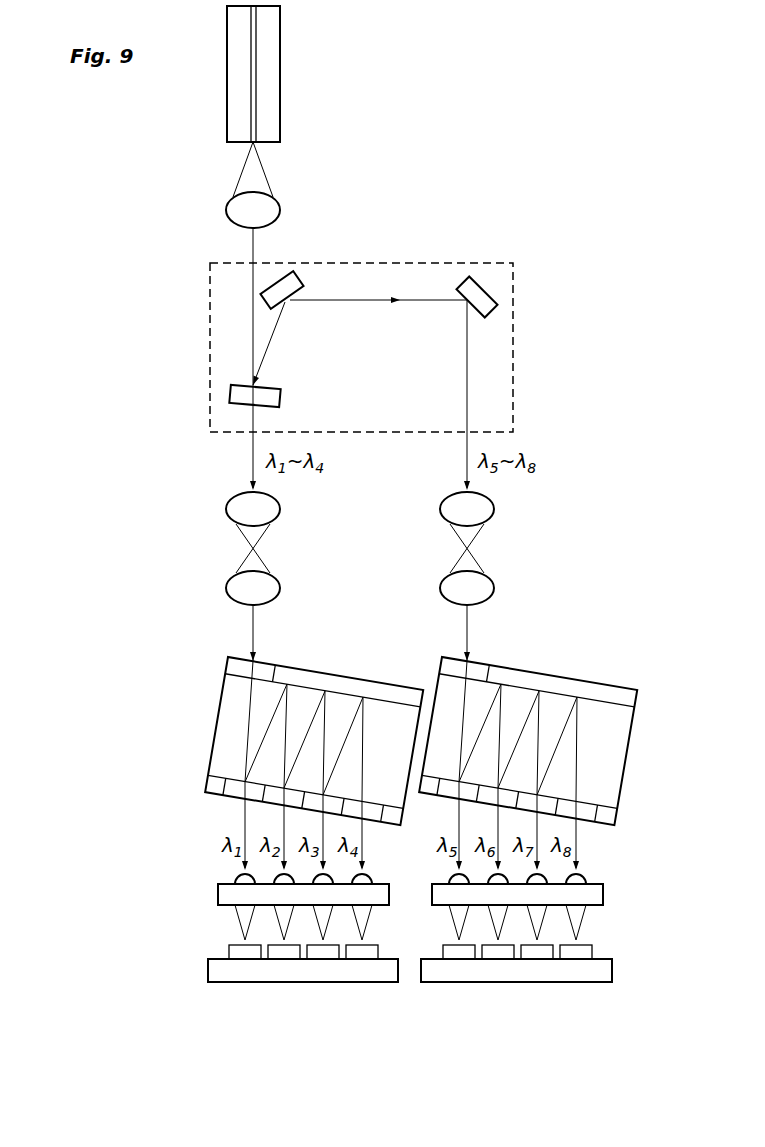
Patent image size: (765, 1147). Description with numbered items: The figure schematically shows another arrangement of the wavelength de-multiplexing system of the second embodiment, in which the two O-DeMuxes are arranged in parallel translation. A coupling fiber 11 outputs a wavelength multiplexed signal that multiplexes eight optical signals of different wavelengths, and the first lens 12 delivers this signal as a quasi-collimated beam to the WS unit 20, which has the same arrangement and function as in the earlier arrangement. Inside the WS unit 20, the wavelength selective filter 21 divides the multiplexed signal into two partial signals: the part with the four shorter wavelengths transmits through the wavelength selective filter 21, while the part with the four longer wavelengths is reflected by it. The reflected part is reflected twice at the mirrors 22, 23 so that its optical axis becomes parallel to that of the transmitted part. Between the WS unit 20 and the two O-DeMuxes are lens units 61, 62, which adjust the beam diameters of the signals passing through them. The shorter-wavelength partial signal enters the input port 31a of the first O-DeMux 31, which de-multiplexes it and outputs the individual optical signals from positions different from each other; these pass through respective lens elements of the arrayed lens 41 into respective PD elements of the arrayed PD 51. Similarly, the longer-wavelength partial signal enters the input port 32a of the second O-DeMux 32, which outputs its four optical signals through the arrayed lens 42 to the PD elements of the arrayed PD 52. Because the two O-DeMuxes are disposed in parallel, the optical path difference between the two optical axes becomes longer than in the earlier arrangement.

The coupling fiber 11 is at (258, 42).
The first lens 12 is at (276, 203).
The WS unit 20 is at (515, 352).
The wavelength selective filter 21 is at (238, 404).
The mirror 22 is at (292, 277).
The mirror 23 is at (478, 280).
The first O-DeMux 31 is at (306, 743).
The input port 31a is at (240, 658).
The second O-DeMux 32 is at (534, 743).
The input port 32a is at (476, 660).
The arrayed lens 41 is at (218, 892).
The arrayed lens 42 is at (603, 892).
The arrayed PD 51 is at (208, 970).
The arrayed PD 52 is at (612, 970).
The lens unit 61 is at (232, 552).
The lens unit 62 is at (492, 549).